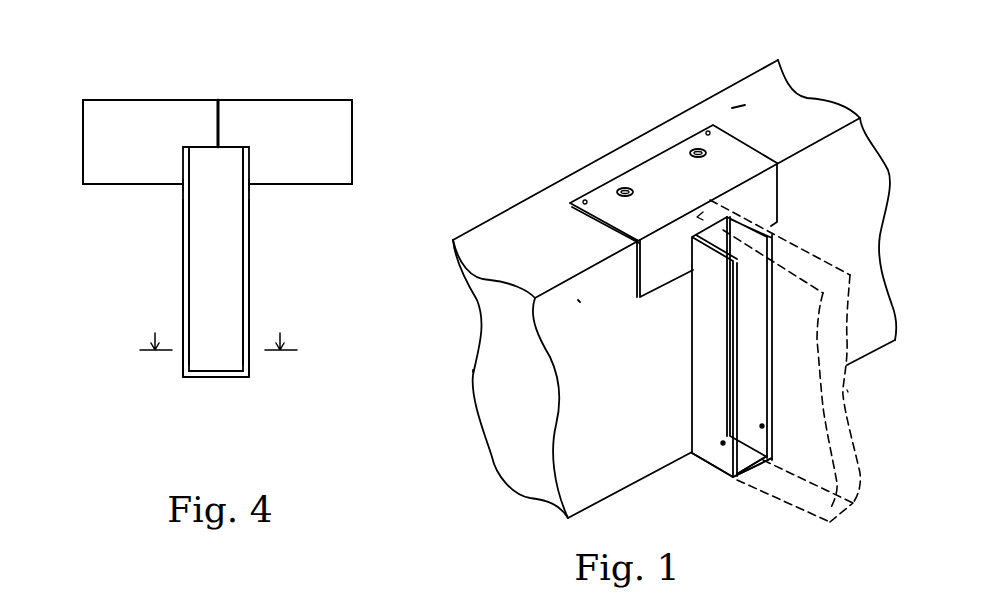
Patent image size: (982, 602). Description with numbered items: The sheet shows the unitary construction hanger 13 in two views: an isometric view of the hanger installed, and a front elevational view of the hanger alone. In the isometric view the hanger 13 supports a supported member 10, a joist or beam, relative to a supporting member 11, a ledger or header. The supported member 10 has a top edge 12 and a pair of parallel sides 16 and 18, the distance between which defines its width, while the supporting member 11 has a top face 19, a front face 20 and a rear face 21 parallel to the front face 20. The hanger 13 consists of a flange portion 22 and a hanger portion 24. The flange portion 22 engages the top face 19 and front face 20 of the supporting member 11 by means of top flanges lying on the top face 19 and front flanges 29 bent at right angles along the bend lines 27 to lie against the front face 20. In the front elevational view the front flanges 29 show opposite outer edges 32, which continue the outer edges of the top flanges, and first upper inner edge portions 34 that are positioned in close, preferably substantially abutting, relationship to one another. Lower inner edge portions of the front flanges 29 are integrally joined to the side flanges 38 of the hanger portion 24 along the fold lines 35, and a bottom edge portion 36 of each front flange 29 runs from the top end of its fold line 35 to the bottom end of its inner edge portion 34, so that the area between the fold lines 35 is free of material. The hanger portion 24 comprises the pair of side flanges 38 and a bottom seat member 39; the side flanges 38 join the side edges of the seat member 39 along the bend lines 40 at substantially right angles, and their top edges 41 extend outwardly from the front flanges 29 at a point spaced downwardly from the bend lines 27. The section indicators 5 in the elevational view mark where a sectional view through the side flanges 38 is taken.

In FIG. 4, the section line 5- 5 is at (218, 331).
In FIG. 1, the supported member 10 is at (807, 466).
In FIG. 1, the supporting member 11 is at (578, 300).
In FIG. 1, the top edge 12 is at (813, 262).
In FIG. 1, the hanger 13 is at (673, 156).
In FIG. 1, the side 16 is at (790, 437).
In FIG. 1, the side 18 is at (847, 390).
In FIG. 1, the top face 19 is at (740, 97).
In FIG. 1, the front face 20 is at (845, 158).
In FIG. 1, the rear face 21 is at (473, 370).
In FIG. 4, the flange portion 22 is at (365, 96).
In FIG. 4, the hanger portion 24 is at (265, 302).
In FIG. 4, the bend lines 27 is at (117, 99).
In FIG. 4, the front flange 29 is at (90, 160).
In FIG. 4, the outer edges 32 is at (83, 143).
In FIG. 4, the first upper inner edge portions 34 is at (215, 100).
In FIG. 4, the fold lines 35 is at (182, 185).
In FIG. 4, the bottom edge portion 36 is at (203, 152).
In FIG. 4, the side flanges 38 is at (183, 297).
In FIG. 4, the bottom seat member 39 is at (205, 380).
In FIG. 4, the bend lines 40 is at (183, 377).
In FIG. 4, the top edges 41 is at (187, 147).